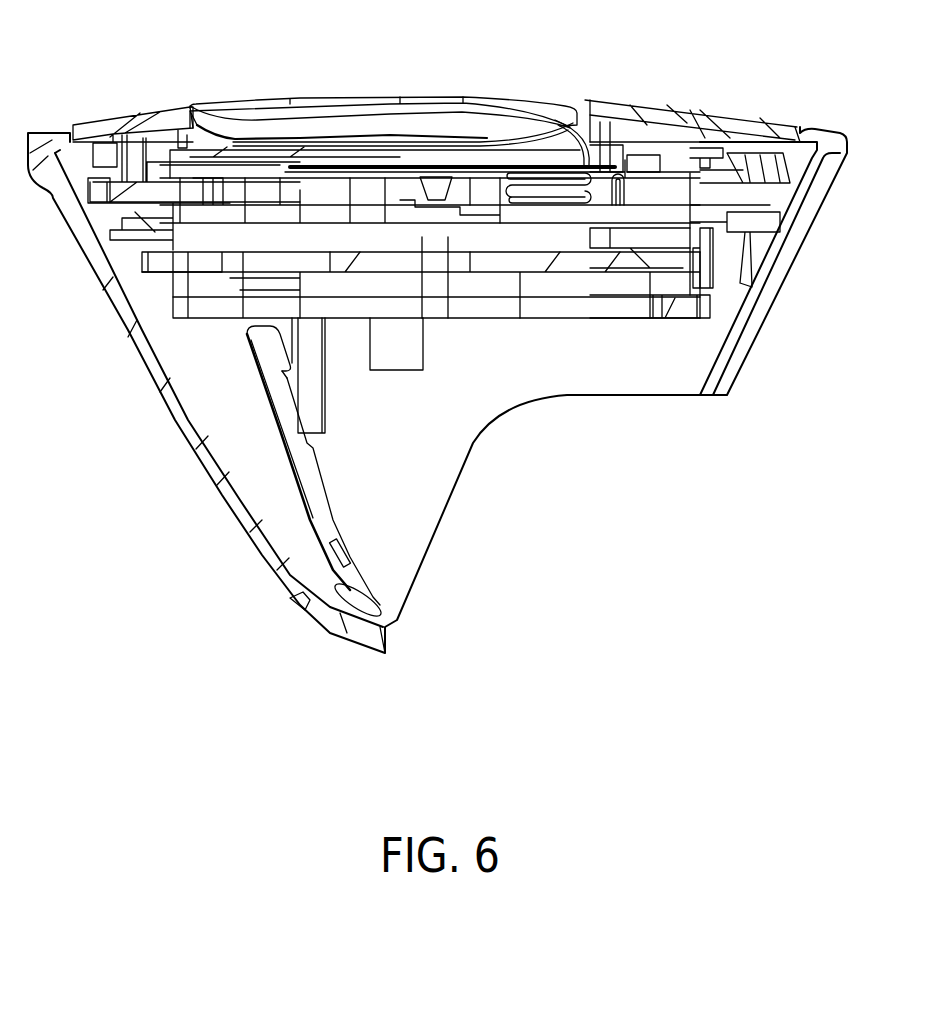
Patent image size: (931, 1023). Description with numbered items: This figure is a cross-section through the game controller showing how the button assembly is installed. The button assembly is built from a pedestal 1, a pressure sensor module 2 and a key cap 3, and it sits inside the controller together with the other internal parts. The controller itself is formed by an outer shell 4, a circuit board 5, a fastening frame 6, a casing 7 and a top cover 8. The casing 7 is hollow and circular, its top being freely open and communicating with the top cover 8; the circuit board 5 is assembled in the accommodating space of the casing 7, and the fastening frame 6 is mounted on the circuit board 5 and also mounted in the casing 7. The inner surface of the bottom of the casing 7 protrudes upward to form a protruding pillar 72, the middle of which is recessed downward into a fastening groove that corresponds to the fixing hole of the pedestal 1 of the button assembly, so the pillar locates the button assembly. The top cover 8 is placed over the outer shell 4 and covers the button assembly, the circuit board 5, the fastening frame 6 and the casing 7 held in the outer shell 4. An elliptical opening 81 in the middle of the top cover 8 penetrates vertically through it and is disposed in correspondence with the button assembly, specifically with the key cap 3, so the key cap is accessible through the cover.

The pedestal 1 is at (480, 183).
The pressure sensor module 2 is at (377, 160).
The key cap 3 is at (322, 125).
The outer shell 4 is at (218, 483).
The circuit board 5 is at (243, 258).
The fastening frame 6 is at (138, 190).
The casing 7 is at (187, 300).
The protruding pillar 72 is at (433, 277).
The top cover 8 is at (130, 123).
The elliptical opening 81 is at (178, 120).